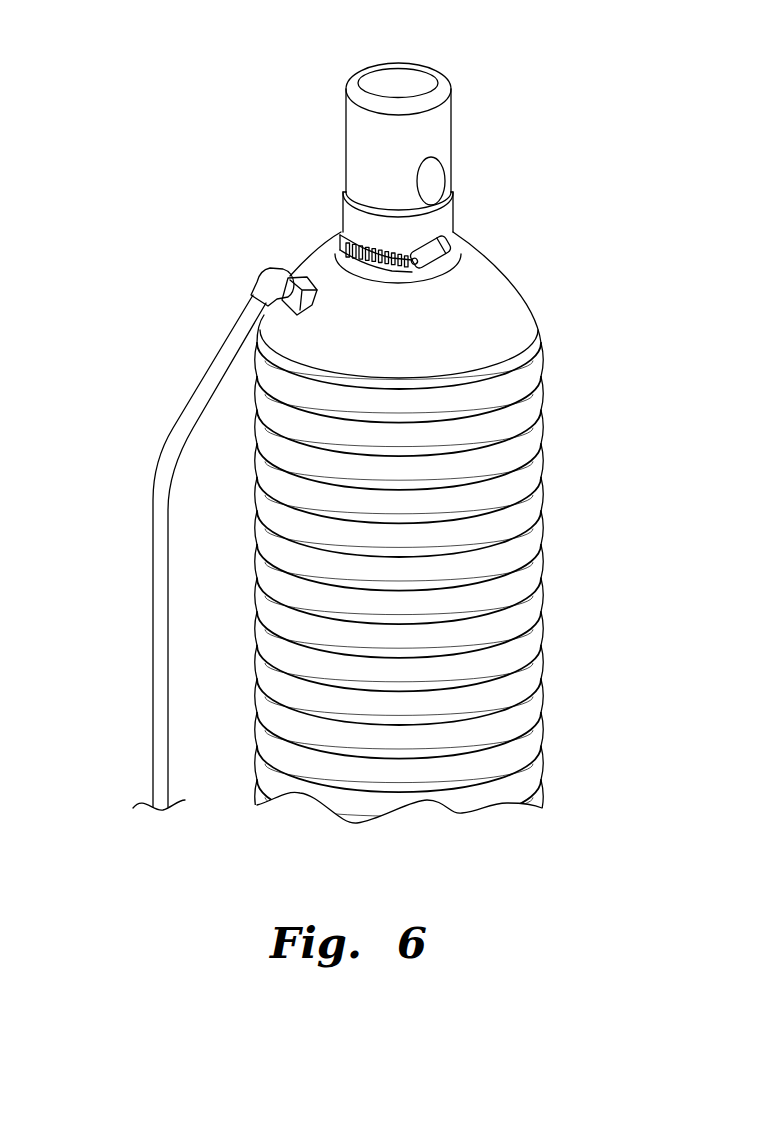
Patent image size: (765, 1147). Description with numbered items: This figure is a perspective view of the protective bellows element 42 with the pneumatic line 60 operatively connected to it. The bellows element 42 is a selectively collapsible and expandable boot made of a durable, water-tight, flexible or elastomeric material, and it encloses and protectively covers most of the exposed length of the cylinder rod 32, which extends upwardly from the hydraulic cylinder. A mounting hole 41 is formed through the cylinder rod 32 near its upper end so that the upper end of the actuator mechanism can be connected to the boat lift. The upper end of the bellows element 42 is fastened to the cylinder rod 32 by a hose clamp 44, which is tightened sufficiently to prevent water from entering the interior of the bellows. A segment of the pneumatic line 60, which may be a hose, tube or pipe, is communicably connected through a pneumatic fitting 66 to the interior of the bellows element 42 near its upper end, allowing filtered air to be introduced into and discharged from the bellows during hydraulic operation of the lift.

The cylinder rod 32 is at (404, 95).
The mounting hole 41 is at (428, 182).
The hose clamp 44 is at (452, 244).
The bellows element 42 is at (541, 607).
The pneumatic fitting 66 is at (270, 269).
The pneumatic line 60 is at (153, 633).